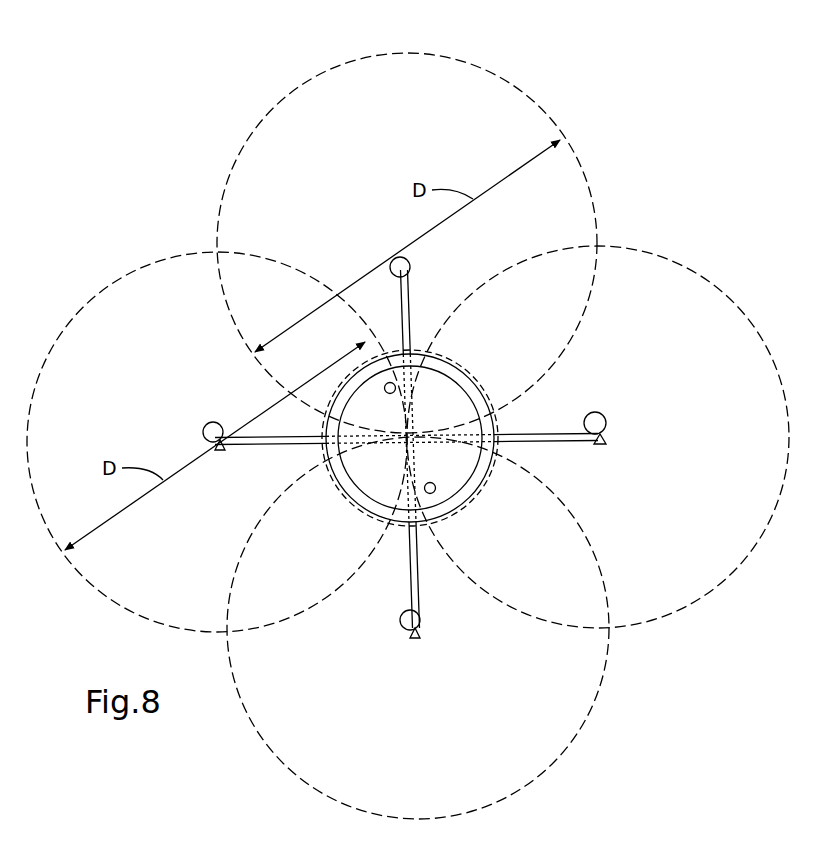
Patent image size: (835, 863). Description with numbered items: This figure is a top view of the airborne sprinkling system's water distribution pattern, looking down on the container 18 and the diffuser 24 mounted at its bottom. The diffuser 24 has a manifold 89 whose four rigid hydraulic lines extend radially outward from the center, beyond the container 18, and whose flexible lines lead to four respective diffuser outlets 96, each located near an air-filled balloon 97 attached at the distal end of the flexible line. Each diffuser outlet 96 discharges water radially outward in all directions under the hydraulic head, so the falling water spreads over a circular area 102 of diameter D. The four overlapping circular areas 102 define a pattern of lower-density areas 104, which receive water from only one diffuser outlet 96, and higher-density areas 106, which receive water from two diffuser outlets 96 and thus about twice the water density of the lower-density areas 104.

The container 18 is at (468, 340).
The diffuser 24 is at (627, 407).
The manifold 89 is at (573, 357).
The diffuser outlet 96 is at (218, 451).
The air-filled balloon 97 is at (211, 424).
The circular area 102 is at (495, 115).
The lower-density area 104 is at (650, 293).
The higher-density area 106 is at (567, 278).